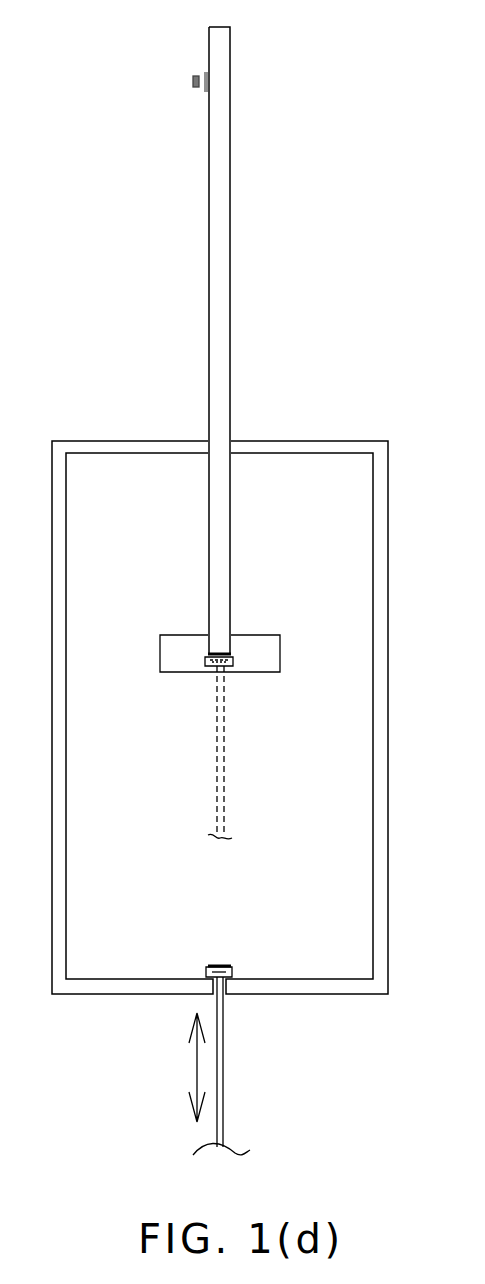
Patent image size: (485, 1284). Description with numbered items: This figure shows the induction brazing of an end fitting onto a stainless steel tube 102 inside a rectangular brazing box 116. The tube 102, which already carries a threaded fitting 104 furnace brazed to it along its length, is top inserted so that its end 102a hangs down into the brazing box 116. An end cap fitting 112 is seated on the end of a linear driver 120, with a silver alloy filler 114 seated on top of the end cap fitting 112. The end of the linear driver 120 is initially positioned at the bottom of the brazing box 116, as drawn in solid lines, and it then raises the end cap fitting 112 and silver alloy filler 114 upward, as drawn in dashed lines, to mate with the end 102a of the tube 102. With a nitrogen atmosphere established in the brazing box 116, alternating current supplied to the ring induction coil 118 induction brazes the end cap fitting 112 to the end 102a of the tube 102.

The stainless steel tube 102 is at (226, 164).
The end of tube 102a is at (207, 653).
The threaded fitting 104 is at (202, 90).
The end cap fitting 112 is at (233, 657).
The silver alloy filler 114 is at (207, 657).
The rectangular brazing box 116 is at (117, 448).
The ring induction coil 118 is at (275, 645).
The linear driver 120 is at (222, 777).